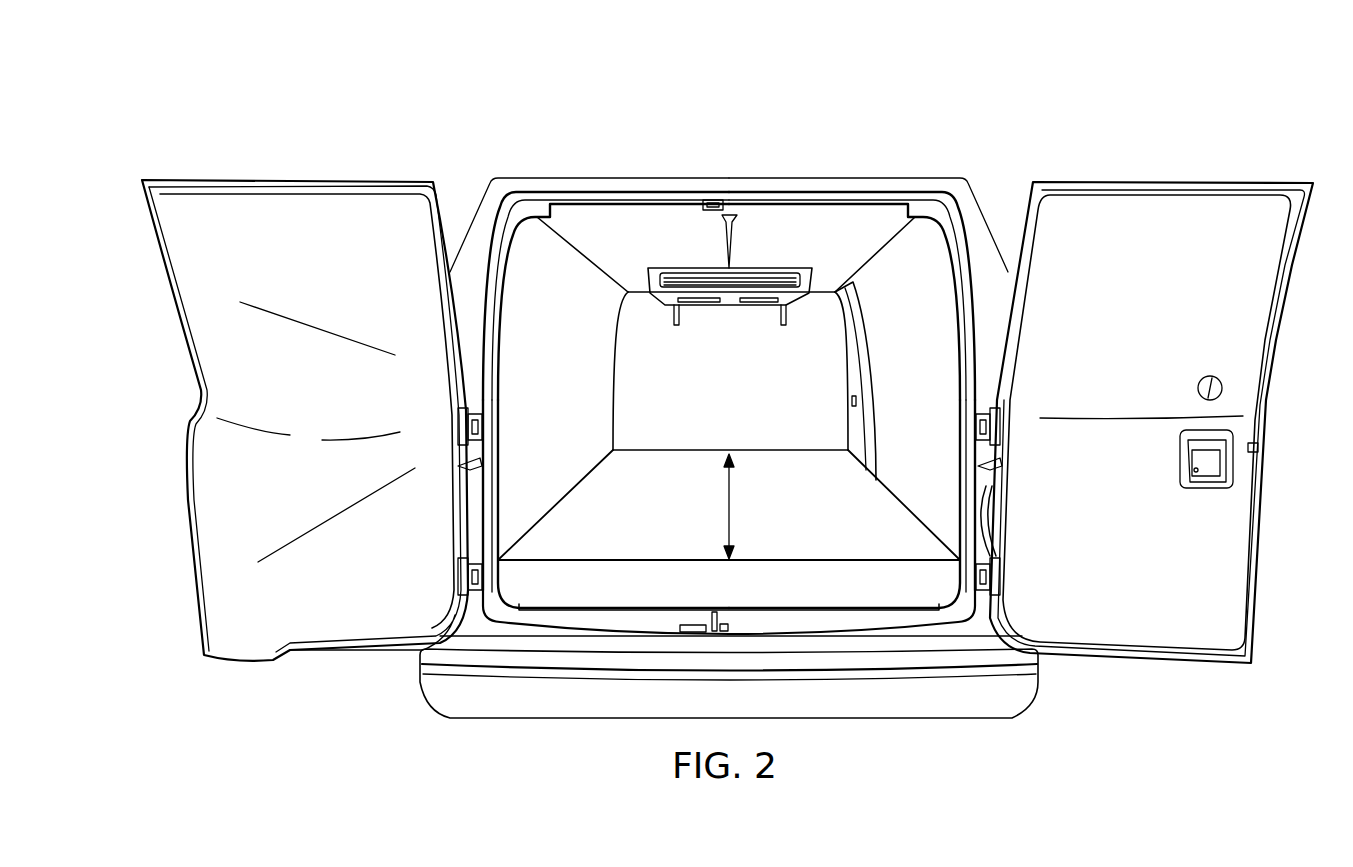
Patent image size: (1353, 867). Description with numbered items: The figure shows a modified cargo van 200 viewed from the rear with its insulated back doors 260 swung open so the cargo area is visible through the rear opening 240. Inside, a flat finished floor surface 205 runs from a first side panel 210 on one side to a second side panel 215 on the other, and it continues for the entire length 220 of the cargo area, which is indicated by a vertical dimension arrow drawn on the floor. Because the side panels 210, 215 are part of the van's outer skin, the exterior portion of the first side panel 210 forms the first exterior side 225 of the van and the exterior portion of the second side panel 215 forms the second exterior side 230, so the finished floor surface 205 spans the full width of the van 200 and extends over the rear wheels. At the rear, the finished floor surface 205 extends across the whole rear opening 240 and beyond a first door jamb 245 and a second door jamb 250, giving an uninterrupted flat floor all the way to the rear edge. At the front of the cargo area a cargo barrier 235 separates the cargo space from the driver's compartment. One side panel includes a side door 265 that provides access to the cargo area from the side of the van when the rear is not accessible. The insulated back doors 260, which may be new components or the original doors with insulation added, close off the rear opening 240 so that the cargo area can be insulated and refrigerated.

The modified cargo van 200 is at (1089, 104).
The finished floor surface 205 is at (665, 457).
The first side panel 210 is at (560, 264).
The second side panel 215 is at (897, 264).
The length of the cargo area 220 is at (740, 508).
The first exterior side 225 is at (490, 208).
The second exterior side 230 is at (969, 212).
The cargo barrier 235 is at (749, 389).
The rear opening 240 is at (791, 236).
The first door jamb 245 is at (500, 484).
The second door jamb 250 is at (958, 485).
The insulated back doors 260 is at (263, 206).
The side door 265 is at (852, 385).